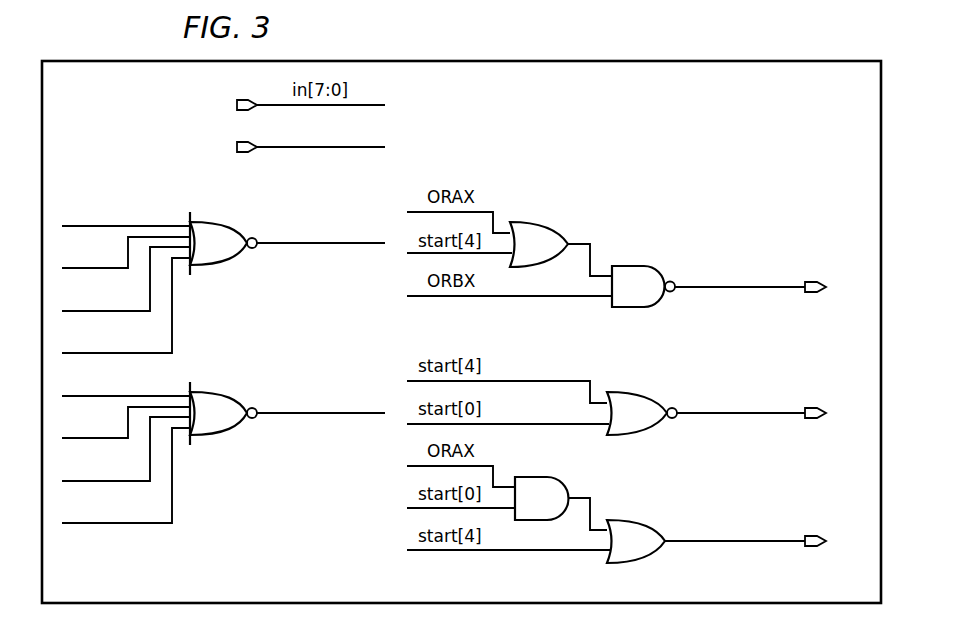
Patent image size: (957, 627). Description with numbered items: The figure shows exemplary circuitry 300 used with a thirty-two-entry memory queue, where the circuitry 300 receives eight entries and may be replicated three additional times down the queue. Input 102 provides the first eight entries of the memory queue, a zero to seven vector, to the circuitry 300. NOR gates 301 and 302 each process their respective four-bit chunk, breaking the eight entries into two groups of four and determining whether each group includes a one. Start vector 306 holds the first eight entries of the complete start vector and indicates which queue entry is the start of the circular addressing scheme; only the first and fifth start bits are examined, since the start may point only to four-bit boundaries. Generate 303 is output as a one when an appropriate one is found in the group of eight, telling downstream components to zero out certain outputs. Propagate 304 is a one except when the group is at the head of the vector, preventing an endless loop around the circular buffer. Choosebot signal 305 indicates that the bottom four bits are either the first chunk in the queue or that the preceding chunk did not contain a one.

The input 102 is at (92, 170).
The circuitry 300 is at (652, 139).
The NOR gate 301 is at (237, 259).
The NOR gate 302 is at (237, 429).
The generate[0] 303 is at (823, 283).
The propagate[0] 304 is at (823, 418).
The choosebot signal 305 is at (823, 546).
The start vector 306 is at (298, 148).